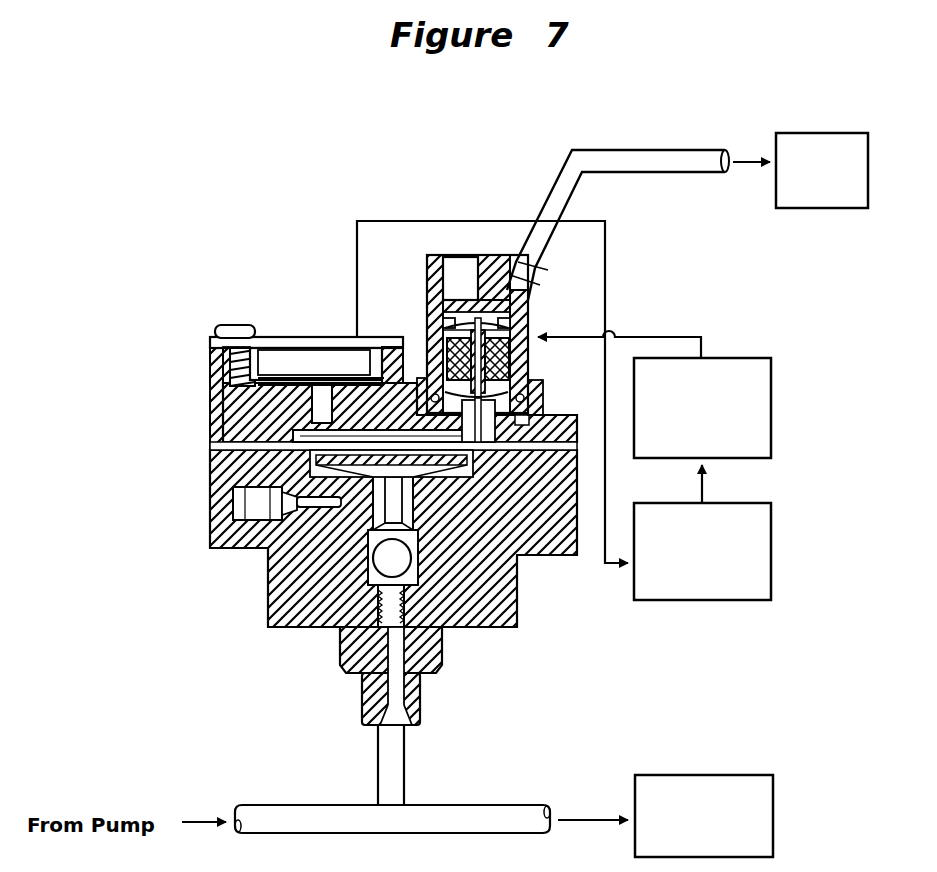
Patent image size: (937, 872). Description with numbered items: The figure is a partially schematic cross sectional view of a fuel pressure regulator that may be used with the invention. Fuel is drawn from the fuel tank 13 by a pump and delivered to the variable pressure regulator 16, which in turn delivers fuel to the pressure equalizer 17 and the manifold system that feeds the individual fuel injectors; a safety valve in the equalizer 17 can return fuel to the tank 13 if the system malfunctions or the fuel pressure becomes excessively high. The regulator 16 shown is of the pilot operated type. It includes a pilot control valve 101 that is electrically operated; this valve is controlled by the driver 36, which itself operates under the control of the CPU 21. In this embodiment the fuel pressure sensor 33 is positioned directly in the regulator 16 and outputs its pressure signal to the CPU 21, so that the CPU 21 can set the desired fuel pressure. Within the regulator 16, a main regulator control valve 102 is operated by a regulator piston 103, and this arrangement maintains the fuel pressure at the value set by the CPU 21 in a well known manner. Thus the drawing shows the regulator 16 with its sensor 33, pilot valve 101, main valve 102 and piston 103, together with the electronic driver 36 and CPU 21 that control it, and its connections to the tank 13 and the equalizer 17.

The fuel tank 13 is at (840, 133).
The variable pressure regulator 16 is at (210, 615).
The pressure equalizer 17 is at (773, 820).
The CPU 21 is at (772, 578).
The fuel pressure sensor 33 is at (310, 353).
The driver 36 is at (738, 358).
The pilot control valve 101 is at (535, 310).
The main regulator control valve 102 is at (367, 562).
The regulator piston 103 is at (313, 460).